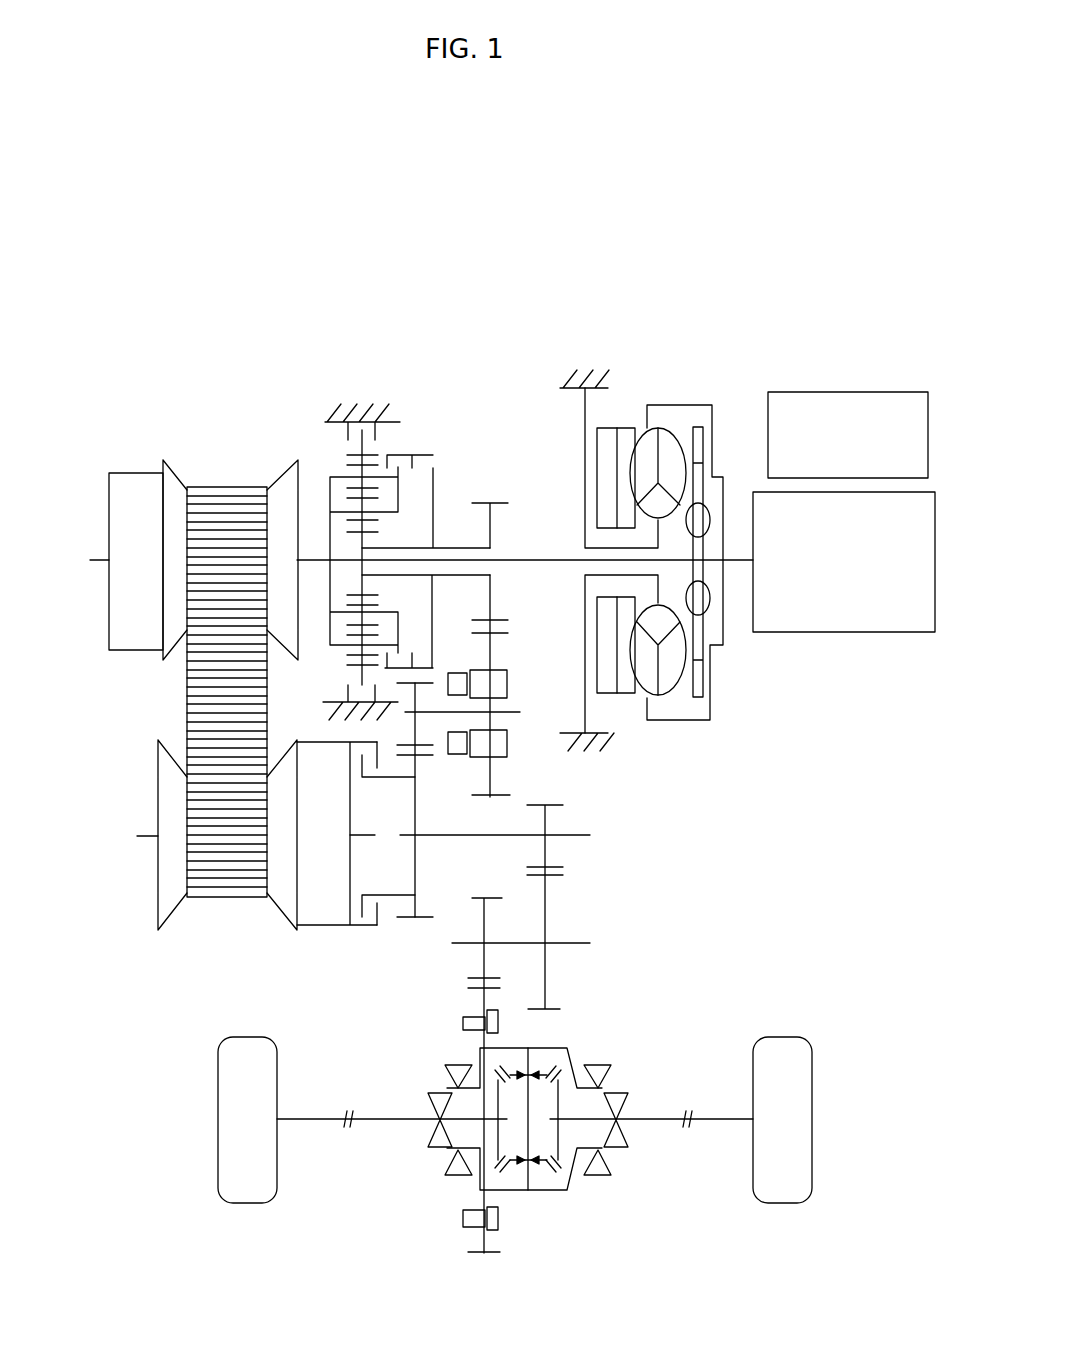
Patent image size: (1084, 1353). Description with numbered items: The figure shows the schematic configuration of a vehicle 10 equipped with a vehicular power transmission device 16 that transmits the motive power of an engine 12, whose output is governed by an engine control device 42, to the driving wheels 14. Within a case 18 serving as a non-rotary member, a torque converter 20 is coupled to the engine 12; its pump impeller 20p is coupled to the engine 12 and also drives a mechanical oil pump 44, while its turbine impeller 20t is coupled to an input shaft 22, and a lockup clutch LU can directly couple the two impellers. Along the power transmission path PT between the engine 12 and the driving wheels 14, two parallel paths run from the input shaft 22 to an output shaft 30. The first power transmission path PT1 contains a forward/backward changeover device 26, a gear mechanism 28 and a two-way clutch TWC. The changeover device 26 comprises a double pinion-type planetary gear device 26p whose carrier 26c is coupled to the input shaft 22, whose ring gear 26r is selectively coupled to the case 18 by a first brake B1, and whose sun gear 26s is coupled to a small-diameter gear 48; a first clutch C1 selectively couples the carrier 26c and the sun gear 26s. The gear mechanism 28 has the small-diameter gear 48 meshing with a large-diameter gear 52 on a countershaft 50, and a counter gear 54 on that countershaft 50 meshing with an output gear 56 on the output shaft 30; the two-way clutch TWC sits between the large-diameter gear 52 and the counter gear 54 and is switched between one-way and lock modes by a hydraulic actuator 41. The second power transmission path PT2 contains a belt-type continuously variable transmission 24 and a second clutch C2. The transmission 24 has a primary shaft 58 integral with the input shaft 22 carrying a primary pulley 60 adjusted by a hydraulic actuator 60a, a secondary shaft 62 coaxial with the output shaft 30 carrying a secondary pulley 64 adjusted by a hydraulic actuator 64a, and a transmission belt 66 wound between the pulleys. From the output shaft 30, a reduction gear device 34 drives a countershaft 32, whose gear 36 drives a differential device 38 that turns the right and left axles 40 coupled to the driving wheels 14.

The vehicle 10 is at (841, 142).
The engine 12 is at (846, 632).
The driving wheels 14 is at (248, 1050).
The vehicular power transmission device 16 is at (668, 299).
The case 18 is at (362, 418).
The torque converter 20 is at (658, 553).
The pump impeller 20p is at (638, 690).
The turbine impeller 20t is at (662, 700).
The input shaft 22 is at (546, 558).
The belt-type continuously variable transmission 24 is at (220, 402).
The forward/backward changeover device 26 is at (383, 524).
The carrier 26c is at (403, 503).
The double pinion-type planetary gear device 26p is at (333, 422).
The ring gear 26r is at (343, 450).
The sun gear 26s is at (368, 594).
The gear mechanism 28 is at (543, 631).
The output shaft 30 is at (452, 838).
The countershaft 32 is at (565, 942).
The reduction gear device 34 is at (601, 863).
The gear 36 is at (472, 896).
The differential device 38 is at (535, 1220).
The axles 40 is at (372, 1118).
The hydraulic actuator 41 is at (456, 758).
The engine control device 42 is at (906, 392).
The mechanical oil pump 44 is at (612, 430).
The small-diameter gear 48 is at (492, 502).
The countershaft 50 is at (511, 710).
The large-diameter gear 52 is at (483, 798).
The counter gear 54 is at (432, 750).
The output gear 56 is at (424, 920).
The primary shaft 58 is at (97, 562).
The primary pulley 60 is at (169, 541).
The hydraulic actuator 60a is at (146, 494).
The secondary shaft 62 is at (138, 838).
The secondary pulley 64 is at (233, 862).
The hydraulic actuator 64a is at (322, 926).
The transmission belt 66 is at (228, 898).
The first brake B1 is at (353, 695).
The first clutch C1 is at (412, 445).
The second clutch C2 is at (385, 852).
The lockup clutch LU is at (703, 400).
The two-way clutch TWC is at (516, 782).
The power transmission path PT is at (669, 793).
The first power transmission path PT1 is at (338, 359).
The second power transmission path PT2 is at (102, 712).